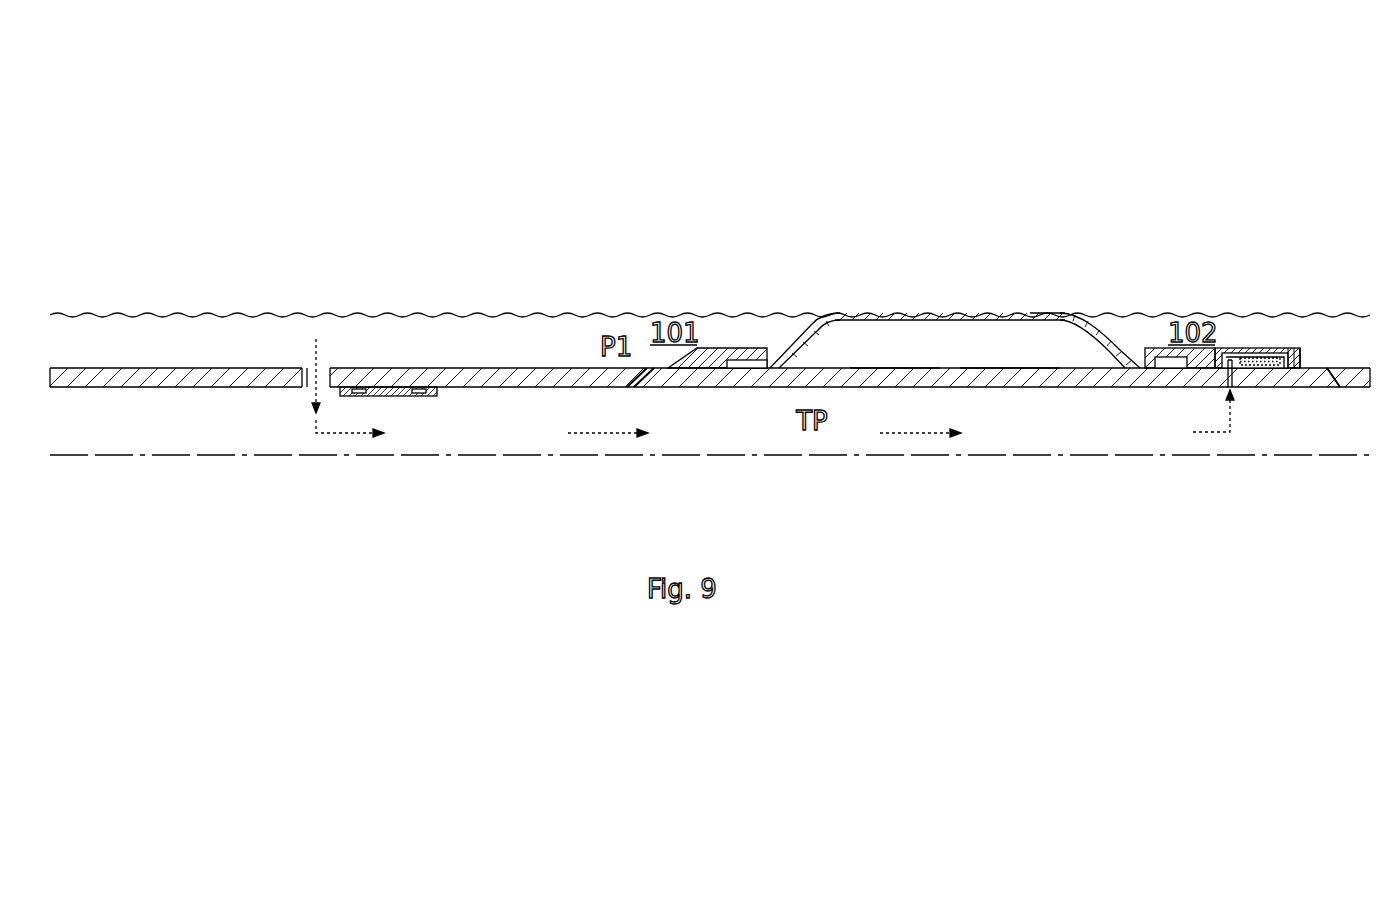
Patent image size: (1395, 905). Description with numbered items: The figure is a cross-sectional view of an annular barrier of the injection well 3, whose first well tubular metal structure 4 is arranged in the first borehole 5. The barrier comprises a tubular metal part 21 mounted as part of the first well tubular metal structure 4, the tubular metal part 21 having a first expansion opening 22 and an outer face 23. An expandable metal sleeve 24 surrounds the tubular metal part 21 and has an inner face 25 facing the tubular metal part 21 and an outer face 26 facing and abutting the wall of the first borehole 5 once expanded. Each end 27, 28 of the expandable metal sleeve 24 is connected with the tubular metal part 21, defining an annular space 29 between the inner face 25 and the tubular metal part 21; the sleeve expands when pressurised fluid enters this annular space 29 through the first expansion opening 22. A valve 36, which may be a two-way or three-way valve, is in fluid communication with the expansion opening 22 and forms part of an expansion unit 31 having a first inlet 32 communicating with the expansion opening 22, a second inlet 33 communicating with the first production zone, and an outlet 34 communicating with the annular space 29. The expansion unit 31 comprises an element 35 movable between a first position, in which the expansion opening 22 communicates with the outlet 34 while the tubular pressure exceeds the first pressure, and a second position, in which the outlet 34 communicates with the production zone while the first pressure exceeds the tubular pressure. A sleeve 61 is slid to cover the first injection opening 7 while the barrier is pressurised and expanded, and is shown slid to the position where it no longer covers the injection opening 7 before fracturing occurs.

The injection well 3 is at (1200, 89).
The first well tubular metal structure 4 is at (492, 372).
The first borehole 5 is at (568, 335).
The first injection opening 7 is at (308, 388).
The sleeve 61 is at (383, 388).
The tubular metal part 21 is at (1010, 368).
The first expansion opening 22 is at (1238, 388).
The outer face 23 is at (893, 368).
The expandable metal sleeve 24 is at (957, 316).
The inner face 25 is at (1055, 322).
The outer face 26 is at (1098, 312).
The end of the expandable metal sleeve 27 is at (748, 360).
The end of the expandable metal sleeve 28 is at (1160, 357).
The annular space 29 is at (835, 340).
The expansion unit 31 is at (1268, 348).
The first inlet 32 is at (1227, 390).
The second inlet 33 is at (1290, 350).
The outlet 34 is at (708, 348).
The element 35 is at (1260, 370).
The valve 36 is at (1300, 357).